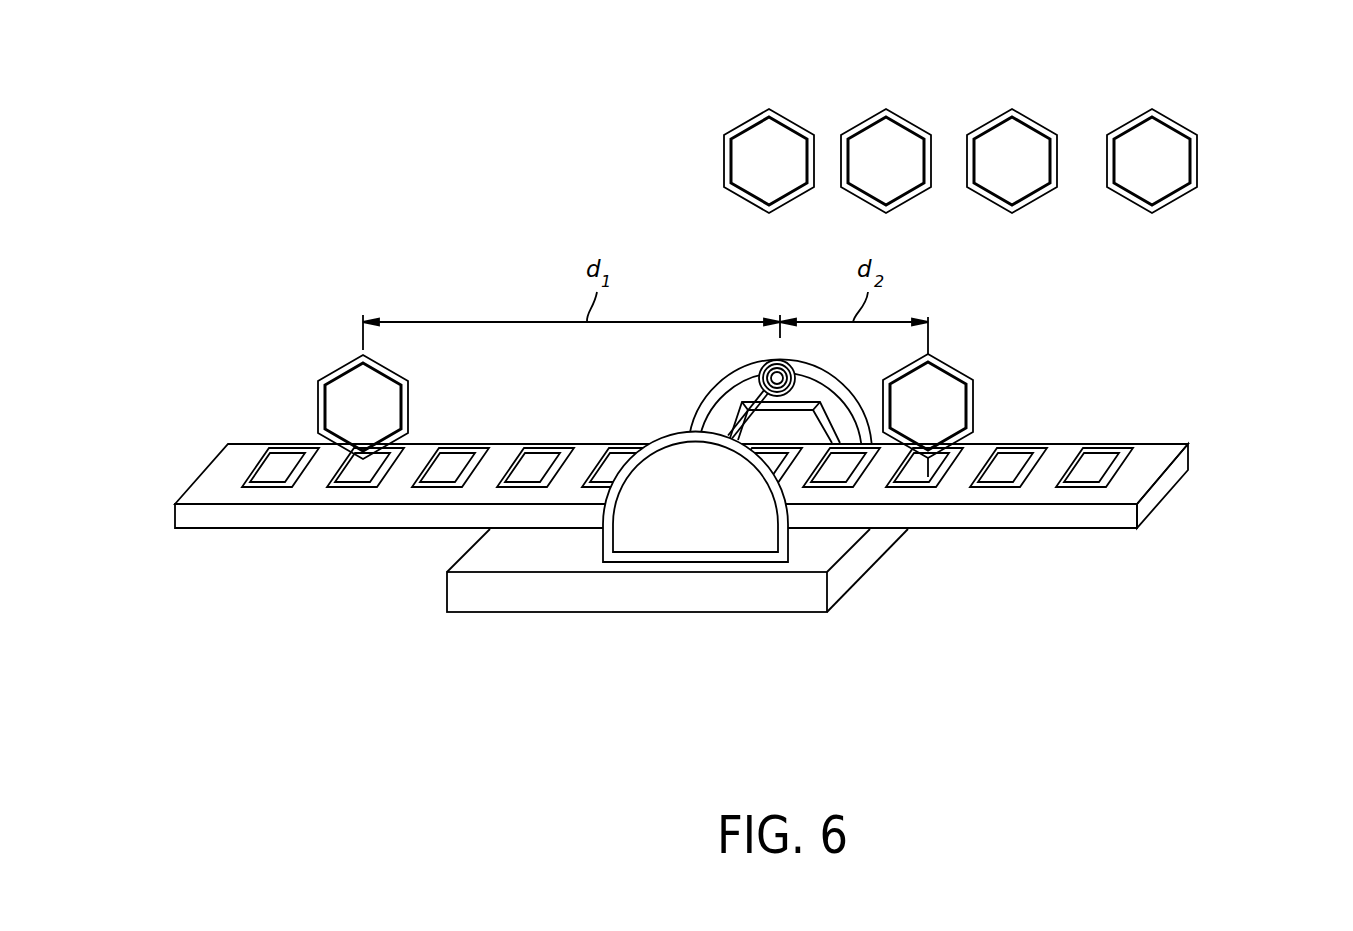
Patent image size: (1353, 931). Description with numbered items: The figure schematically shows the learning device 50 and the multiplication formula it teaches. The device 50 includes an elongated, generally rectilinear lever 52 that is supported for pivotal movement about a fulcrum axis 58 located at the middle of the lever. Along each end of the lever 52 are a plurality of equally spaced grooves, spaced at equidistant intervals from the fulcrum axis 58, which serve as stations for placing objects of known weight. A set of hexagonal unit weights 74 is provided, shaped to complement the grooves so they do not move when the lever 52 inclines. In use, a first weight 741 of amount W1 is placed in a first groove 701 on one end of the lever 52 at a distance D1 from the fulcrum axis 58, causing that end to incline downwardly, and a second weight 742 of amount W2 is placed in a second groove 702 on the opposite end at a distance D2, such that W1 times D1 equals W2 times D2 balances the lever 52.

The weights 74 is at (1238, 59).
The first weight 741 is at (356, 358).
The second weight 742 is at (957, 370).
The fulcrum axis 58 is at (760, 370).
The learning device 50 is at (708, 445).
The lever 52 is at (1160, 489).
The first groove 701 is at (350, 482).
The second groove 702 is at (860, 478).